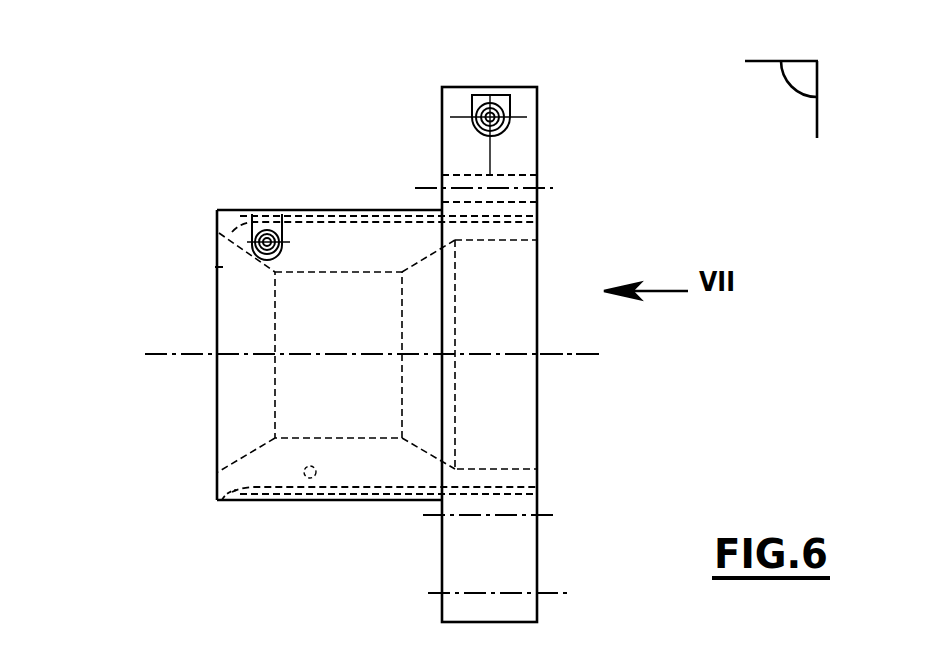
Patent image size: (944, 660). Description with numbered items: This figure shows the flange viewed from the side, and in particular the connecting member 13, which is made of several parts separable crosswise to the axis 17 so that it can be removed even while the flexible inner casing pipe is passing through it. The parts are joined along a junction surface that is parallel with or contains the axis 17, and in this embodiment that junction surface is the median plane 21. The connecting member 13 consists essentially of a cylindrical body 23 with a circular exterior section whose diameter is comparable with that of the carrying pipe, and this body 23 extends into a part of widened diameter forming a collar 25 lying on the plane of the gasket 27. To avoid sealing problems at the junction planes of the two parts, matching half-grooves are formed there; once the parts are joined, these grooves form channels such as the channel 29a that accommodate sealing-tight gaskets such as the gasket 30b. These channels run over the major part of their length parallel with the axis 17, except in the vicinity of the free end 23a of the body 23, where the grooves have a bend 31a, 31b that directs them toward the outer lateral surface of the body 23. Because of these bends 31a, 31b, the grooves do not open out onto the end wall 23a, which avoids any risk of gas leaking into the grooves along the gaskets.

The connecting member 13 is at (378, 212).
The axis 17 is at (590, 357).
The median plane 21 is at (781, 99).
The cylindrical body 23 is at (363, 468).
The free end of the body 23a is at (218, 268).
The collar 25 is at (520, 107).
The gasket 27 is at (537, 563).
The channel 29a is at (279, 494).
The sealing-tight gasket 30b is at (305, 216).
The bend 31a is at (220, 502).
The bend 31b is at (237, 216).